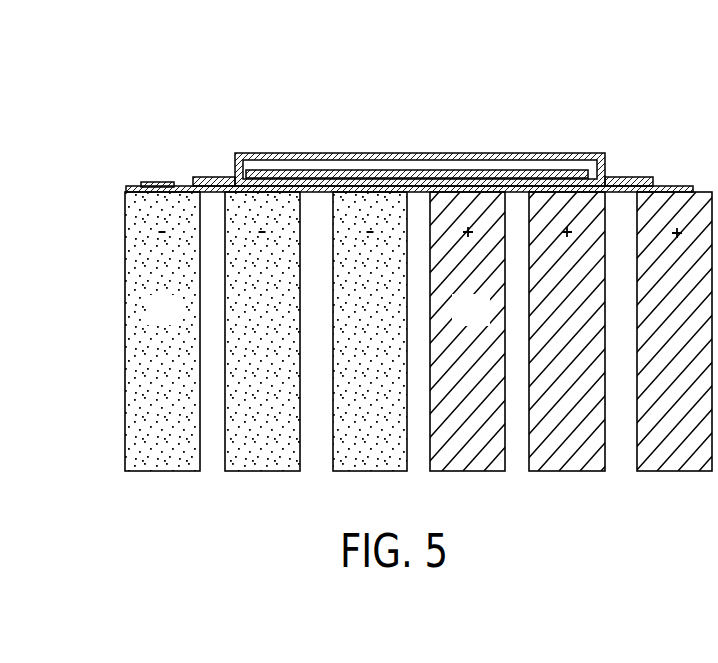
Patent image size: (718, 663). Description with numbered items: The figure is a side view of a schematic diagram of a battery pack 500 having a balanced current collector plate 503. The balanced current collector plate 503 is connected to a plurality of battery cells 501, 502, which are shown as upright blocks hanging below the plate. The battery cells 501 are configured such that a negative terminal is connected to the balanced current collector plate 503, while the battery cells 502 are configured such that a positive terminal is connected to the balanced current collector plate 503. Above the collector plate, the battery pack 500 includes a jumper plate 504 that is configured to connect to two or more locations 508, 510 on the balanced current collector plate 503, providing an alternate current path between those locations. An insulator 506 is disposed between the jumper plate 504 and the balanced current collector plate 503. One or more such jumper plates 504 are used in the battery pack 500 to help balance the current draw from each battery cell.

The battery pack 500 is at (80, 141).
The battery cells 501 is at (181, 323).
The battery cells 502 is at (486, 323).
The balanced current collector plate 503 is at (160, 184).
The jumper plate 504 is at (283, 153).
The insulator 506 is at (453, 172).
The location on the balanced current collector plate 508 is at (632, 176).
The location on the balanced current collector plate 510 is at (217, 192).